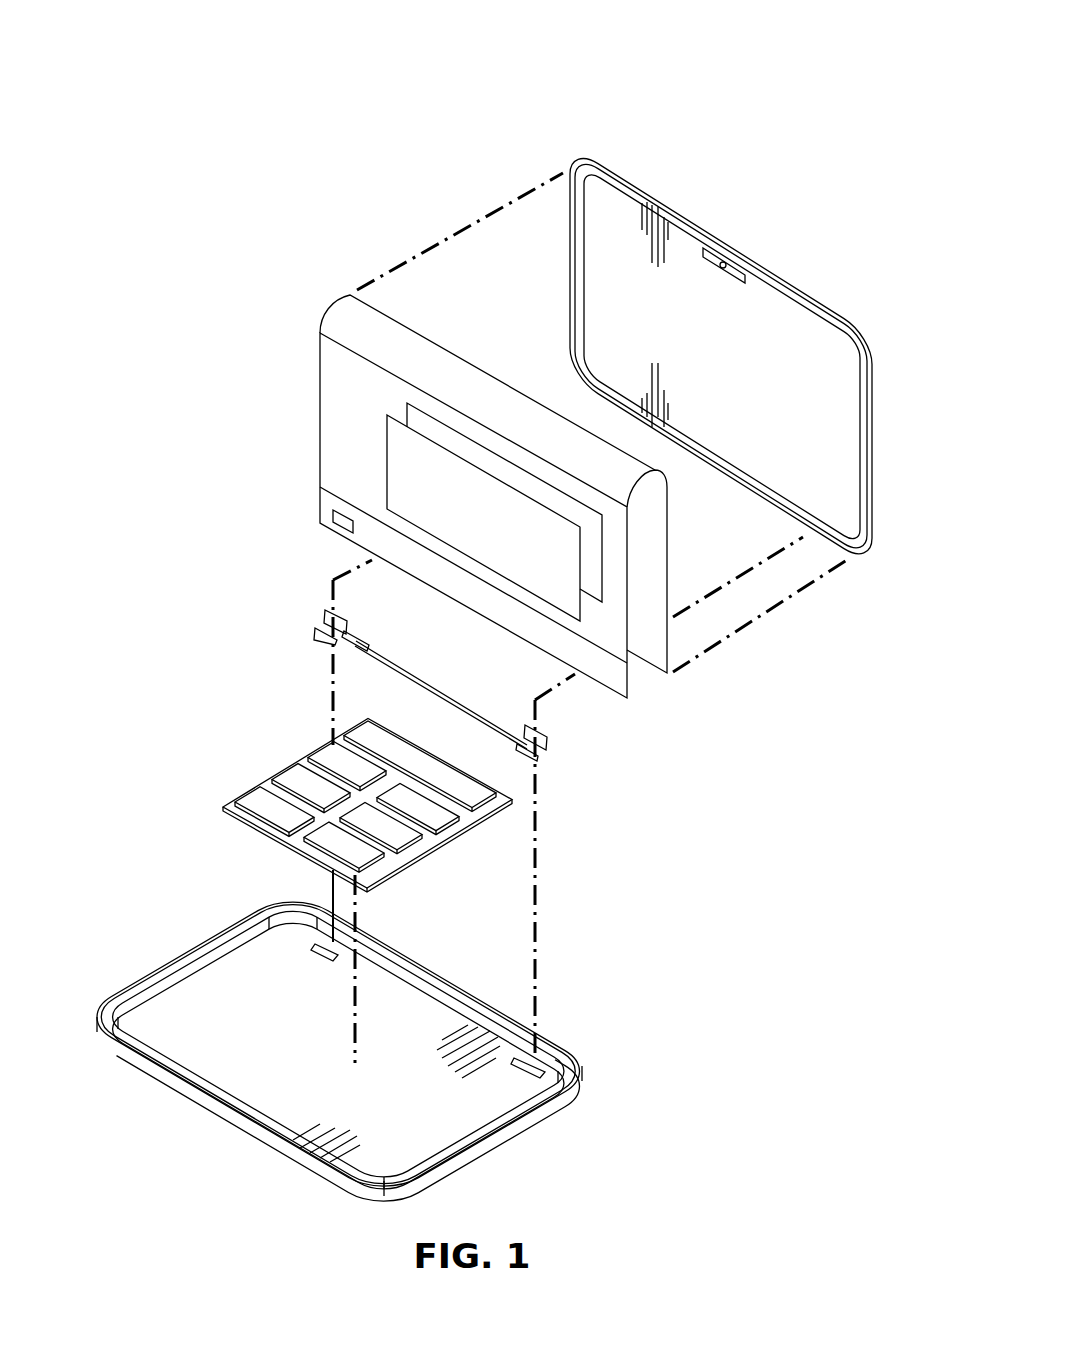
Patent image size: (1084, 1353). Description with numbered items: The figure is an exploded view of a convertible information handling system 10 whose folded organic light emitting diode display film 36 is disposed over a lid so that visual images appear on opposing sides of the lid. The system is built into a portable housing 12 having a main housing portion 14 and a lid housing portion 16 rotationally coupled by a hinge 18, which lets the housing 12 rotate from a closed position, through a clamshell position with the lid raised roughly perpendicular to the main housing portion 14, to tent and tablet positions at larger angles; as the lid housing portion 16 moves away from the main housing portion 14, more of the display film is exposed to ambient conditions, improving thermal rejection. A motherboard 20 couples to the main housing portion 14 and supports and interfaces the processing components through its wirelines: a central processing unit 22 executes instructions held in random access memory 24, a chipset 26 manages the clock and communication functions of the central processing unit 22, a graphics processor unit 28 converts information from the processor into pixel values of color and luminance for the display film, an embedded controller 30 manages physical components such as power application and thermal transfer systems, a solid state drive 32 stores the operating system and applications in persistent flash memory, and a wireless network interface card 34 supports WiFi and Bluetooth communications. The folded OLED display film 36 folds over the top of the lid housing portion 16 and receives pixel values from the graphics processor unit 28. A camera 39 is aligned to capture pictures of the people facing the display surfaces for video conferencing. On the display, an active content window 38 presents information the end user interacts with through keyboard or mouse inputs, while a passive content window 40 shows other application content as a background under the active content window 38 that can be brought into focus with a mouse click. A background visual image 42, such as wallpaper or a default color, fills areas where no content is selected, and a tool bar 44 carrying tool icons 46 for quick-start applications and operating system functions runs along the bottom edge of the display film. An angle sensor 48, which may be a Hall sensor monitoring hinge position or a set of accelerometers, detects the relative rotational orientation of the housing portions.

The convertible information handling system 10 is at (298, 132).
The portable housing 12 is at (652, 906).
The main housing portion 14 is at (235, 1125).
The lid housing portion 16 is at (812, 292).
The hinge 18 is at (548, 748).
The motherboard 20 is at (237, 814).
The central processing unit (CPU) 22 is at (327, 746).
The random access memory (RAM) 24 is at (297, 765).
The chipset 26 is at (468, 788).
The graphics processor unit (GPU) 28 is at (408, 838).
The embedded controller (EC) 30 is at (248, 793).
The solid state drive (SSD) 32 is at (442, 818).
The wireless network interface card (WNIC) 34 is at (372, 863).
The folded OLED display film 36 is at (262, 313).
The active content window 38 is at (392, 450).
The camera 39 is at (723, 268).
The passive content window 40 is at (593, 565).
The background visual image 42 is at (365, 382).
The tool bar 44 is at (320, 507).
The tool icons 46 is at (343, 537).
The angle sensor 48 is at (348, 648).